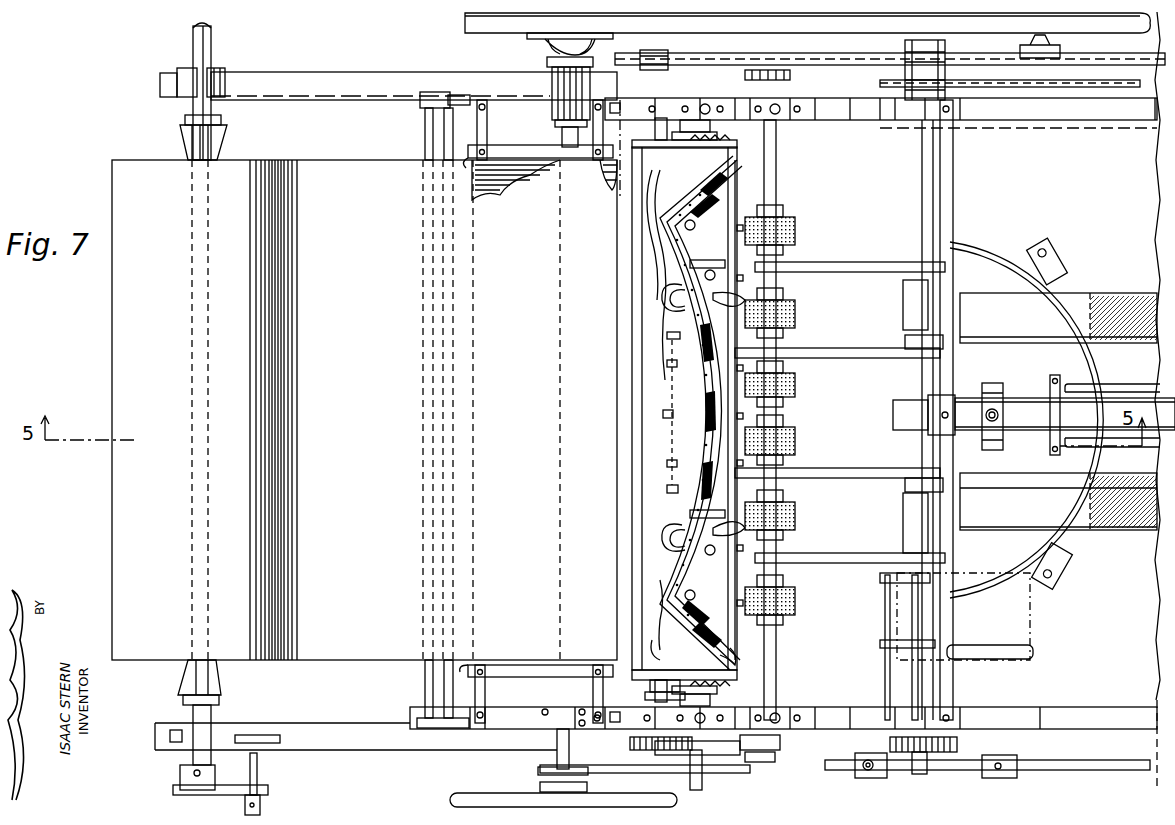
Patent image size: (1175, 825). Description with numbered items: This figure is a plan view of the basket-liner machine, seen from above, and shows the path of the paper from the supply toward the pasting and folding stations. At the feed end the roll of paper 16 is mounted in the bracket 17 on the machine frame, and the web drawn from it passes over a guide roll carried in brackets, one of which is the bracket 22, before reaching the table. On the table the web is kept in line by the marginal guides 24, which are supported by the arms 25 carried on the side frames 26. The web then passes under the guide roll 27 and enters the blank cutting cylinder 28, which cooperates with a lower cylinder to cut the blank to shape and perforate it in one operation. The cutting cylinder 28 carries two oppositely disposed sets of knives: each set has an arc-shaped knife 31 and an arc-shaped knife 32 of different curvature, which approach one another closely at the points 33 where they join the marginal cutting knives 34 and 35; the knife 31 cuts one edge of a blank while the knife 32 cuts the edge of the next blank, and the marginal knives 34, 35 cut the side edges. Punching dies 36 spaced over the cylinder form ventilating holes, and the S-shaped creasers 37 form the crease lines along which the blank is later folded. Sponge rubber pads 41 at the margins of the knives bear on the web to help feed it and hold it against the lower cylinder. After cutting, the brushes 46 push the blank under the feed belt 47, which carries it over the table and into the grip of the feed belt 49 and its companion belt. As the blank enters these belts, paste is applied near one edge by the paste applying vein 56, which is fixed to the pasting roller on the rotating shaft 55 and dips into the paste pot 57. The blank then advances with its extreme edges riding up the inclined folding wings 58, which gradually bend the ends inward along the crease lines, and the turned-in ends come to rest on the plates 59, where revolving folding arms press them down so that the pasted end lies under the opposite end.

The roll of paper 16 is at (112, 351).
The bracket 17 is at (178, 85).
The bracket 22 is at (428, 92).
The marginal guides 24 is at (540, 150).
The arms 25 is at (485, 132).
The side frames 26 is at (513, 100).
The guide roll 27 is at (636, 612).
The blank cutting cylinder 28 is at (735, 208).
The arc-shaped knife 31 is at (680, 505).
The arc-shaped knife 32 is at (700, 462).
The points 33 is at (676, 222).
The marginal cutting knife 34 is at (674, 210).
The marginal cutting knife 35 is at (738, 664).
The punching dies 36 is at (662, 418).
The S-shaped creasers 37 is at (665, 298).
The sponge rubber pads 41 is at (710, 190).
The brushes 46 is at (795, 365).
The feed belt 47 is at (852, 360).
The feed belt 49 is at (1034, 415).
The rotating shaft 55 is at (915, 681).
The paste applying vein 56 is at (915, 614).
The paste pot 57 is at (987, 655).
The folding wings 58 is at (1085, 288).
The plates 59 is at (1058, 411).